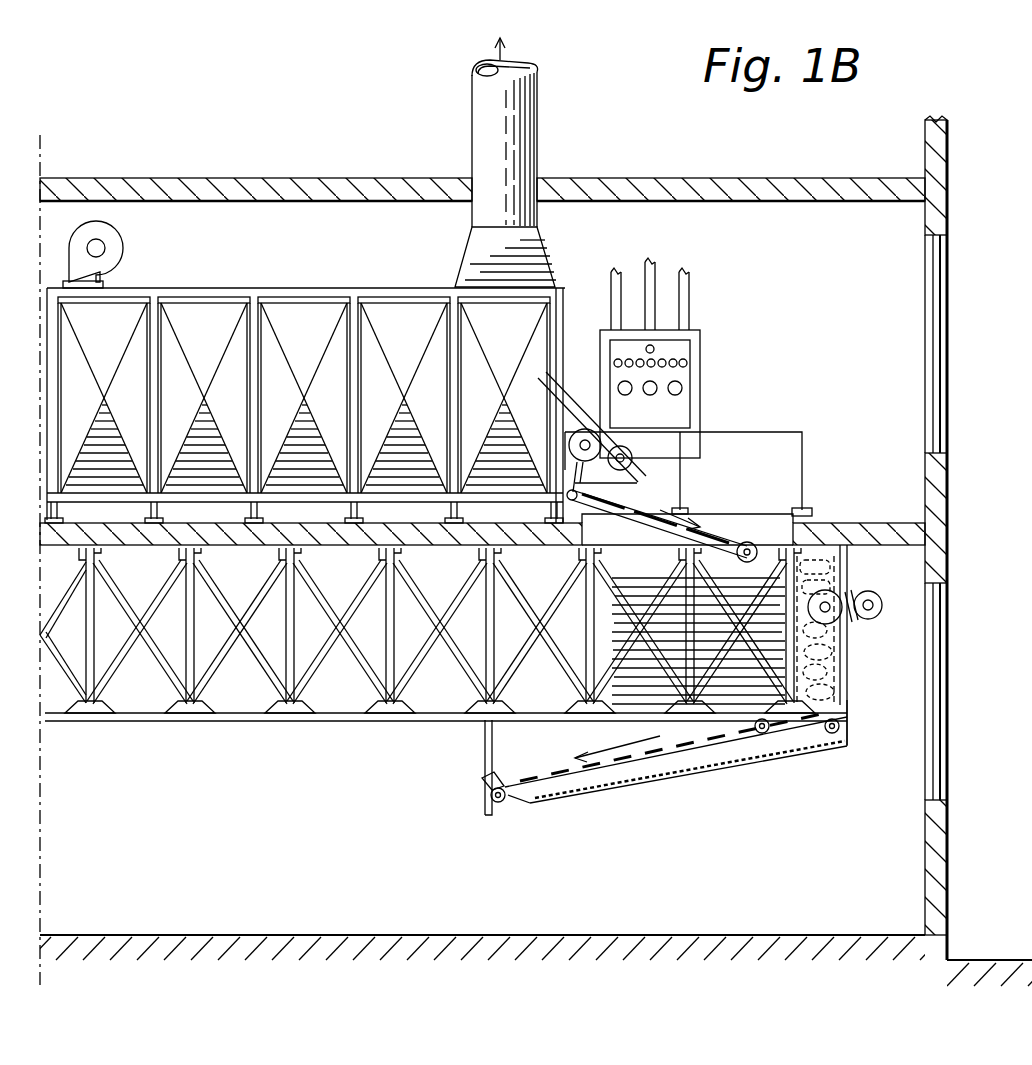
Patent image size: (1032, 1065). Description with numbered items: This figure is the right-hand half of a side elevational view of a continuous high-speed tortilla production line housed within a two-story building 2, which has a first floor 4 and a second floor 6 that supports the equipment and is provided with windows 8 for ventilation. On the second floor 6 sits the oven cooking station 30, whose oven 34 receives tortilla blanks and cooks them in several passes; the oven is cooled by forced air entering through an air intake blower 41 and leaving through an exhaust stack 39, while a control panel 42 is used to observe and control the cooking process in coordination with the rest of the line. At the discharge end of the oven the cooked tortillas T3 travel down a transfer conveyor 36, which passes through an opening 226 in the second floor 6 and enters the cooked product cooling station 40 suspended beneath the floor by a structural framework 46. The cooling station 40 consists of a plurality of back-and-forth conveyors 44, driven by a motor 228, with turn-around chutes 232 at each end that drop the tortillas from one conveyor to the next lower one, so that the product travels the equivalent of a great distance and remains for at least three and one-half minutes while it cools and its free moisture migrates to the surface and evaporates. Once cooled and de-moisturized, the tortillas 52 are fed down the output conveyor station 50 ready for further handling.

The two-story building 2 is at (962, 494).
The first floor 4 is at (480, 932).
The second floor 6 is at (858, 518).
The windows 8 is at (940, 343).
The oven cooking station 30 is at (332, 270).
The oven 34 is at (576, 300).
The transfer conveyor 36 is at (700, 530).
The exhaust stack 39 is at (543, 108).
The cooked product cooling station 40 is at (340, 722).
The air intake blower 41 is at (125, 243).
The control panel 42 is at (720, 338).
The conveyors 44 is at (660, 570).
The structural framework 46 is at (186, 607).
The output conveyor station 50 is at (745, 775).
The tortillas 52 is at (556, 770).
The opening 226 is at (800, 518).
The motor 228 is at (843, 613).
The turn-around chutes 232 is at (828, 668).
The cooked tortillas T3 is at (618, 508).